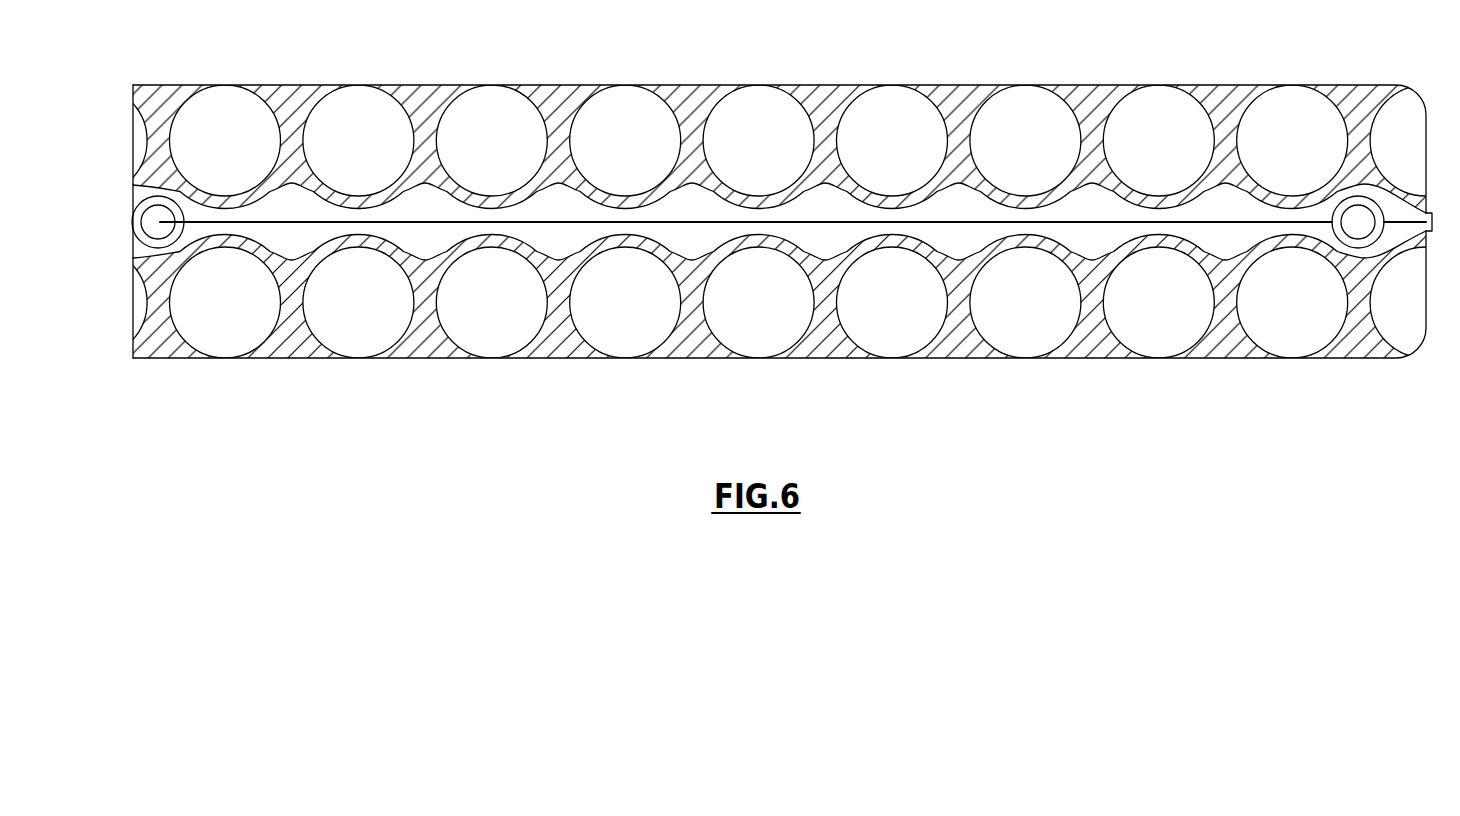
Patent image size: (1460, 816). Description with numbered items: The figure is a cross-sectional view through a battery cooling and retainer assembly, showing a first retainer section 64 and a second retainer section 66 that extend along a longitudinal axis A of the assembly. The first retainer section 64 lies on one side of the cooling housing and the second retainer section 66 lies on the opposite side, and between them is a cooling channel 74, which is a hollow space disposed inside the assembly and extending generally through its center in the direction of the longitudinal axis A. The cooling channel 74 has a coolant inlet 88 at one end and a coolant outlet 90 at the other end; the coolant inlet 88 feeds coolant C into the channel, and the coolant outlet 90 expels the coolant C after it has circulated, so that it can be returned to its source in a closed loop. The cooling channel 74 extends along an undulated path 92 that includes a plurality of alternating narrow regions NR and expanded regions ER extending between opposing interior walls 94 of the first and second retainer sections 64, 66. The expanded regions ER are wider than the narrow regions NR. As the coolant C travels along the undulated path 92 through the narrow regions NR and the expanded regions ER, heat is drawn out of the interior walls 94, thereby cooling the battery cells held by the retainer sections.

The first retainer section 64 is at (688, 85).
The second retainer section 66 is at (692, 358).
The cooling channel 74 is at (977, 235).
The coolant inlet 88 is at (159, 222).
The coolant outlet 90 is at (1357, 226).
The undulated path 92 is at (293, 197).
The interior walls 94 is at (235, 208).
The longitudinal axis A is at (428, 224).
The coolant C is at (413, 205).
The narrow regions NR is at (746, 179).
The expanded regions ER is at (957, 181).